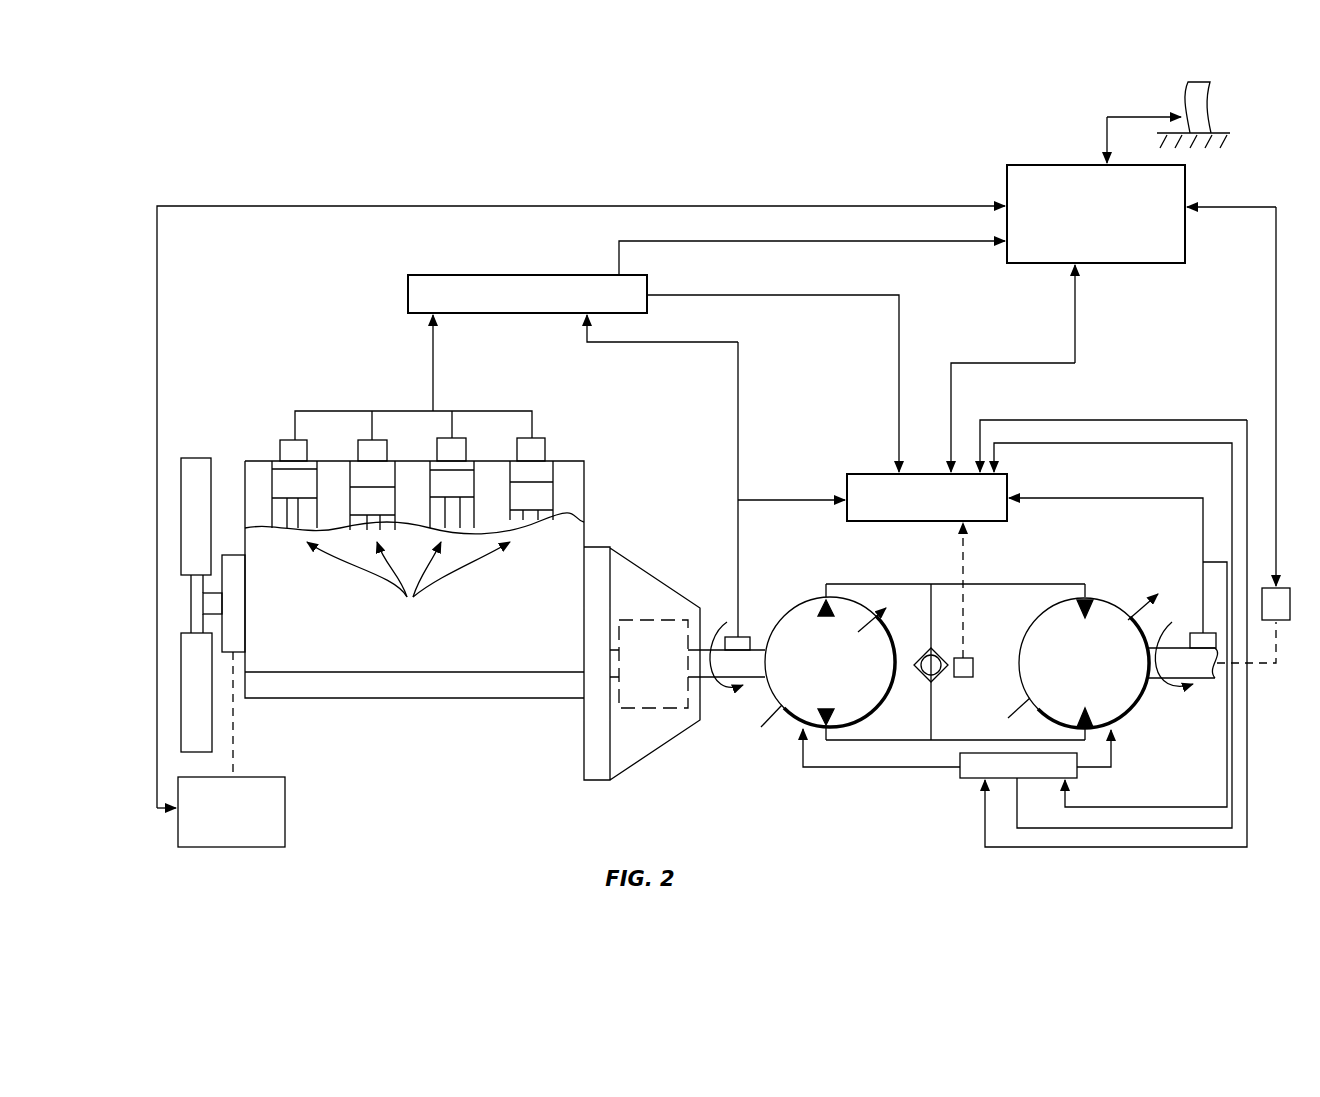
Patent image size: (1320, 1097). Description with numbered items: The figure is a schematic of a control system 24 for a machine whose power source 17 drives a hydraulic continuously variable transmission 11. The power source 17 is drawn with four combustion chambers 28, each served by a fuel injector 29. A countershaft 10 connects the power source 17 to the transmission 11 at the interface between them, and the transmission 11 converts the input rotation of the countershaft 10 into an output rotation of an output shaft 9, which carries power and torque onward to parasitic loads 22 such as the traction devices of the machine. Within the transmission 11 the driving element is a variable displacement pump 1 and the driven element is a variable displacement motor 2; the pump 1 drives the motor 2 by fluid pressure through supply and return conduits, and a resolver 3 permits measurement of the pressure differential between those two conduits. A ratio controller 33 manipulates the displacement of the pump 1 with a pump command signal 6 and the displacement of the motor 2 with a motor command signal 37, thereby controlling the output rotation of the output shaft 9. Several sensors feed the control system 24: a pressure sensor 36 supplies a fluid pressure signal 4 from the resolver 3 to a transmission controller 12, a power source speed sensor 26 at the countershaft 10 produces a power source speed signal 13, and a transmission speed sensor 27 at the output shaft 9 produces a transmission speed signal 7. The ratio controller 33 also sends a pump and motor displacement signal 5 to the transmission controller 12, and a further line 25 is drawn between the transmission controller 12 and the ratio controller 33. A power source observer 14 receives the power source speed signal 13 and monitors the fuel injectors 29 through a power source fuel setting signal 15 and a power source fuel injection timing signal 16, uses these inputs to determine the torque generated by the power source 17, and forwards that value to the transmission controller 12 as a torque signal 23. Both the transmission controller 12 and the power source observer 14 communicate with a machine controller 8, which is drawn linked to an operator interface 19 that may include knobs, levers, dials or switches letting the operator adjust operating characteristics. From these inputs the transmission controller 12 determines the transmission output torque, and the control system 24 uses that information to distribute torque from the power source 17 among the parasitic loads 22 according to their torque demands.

The pump 1 is at (818, 673).
The motor 2 is at (1075, 673).
The resolver 3 is at (916, 681).
The fluid pressure signal 4 is at (946, 558).
The pump and motor displacement signal 5 is at (1148, 443).
The pump command signal 6 is at (842, 767).
The transmission speed signal 7 is at (1086, 498).
The machine controller 8 is at (1088, 225).
The output shaft 9 is at (1213, 680).
The countershaft 10 is at (727, 674).
The transmission 11 is at (904, 792).
The transmission controller 12 is at (917, 508).
The power source speed signal 13 is at (738, 452).
The power source observer 14 is at (517, 306).
The power source fuel setting signal 15 is at (380, 363).
The power source fuel injection timing signal 16 is at (433, 357).
The power source 17 is at (387, 717).
The operator interfaces 19 is at (1211, 96).
The parasitic loads 22 is at (219, 824).
The torque signal 23 is at (899, 337).
The control system 24 is at (846, 167).
The signal line 25 is at (1095, 420).
The power source speed sensor 26 is at (743, 637).
The transmission speed sensor 27 is at (1190, 633).
The combustion chambers 28 is at (408, 584).
The fuel injectors 29 is at (360, 448).
The ratio controller 33 is at (1018, 765).
The pressure sensor 36 is at (973, 658).
The motor command signal 37 is at (1111, 745).